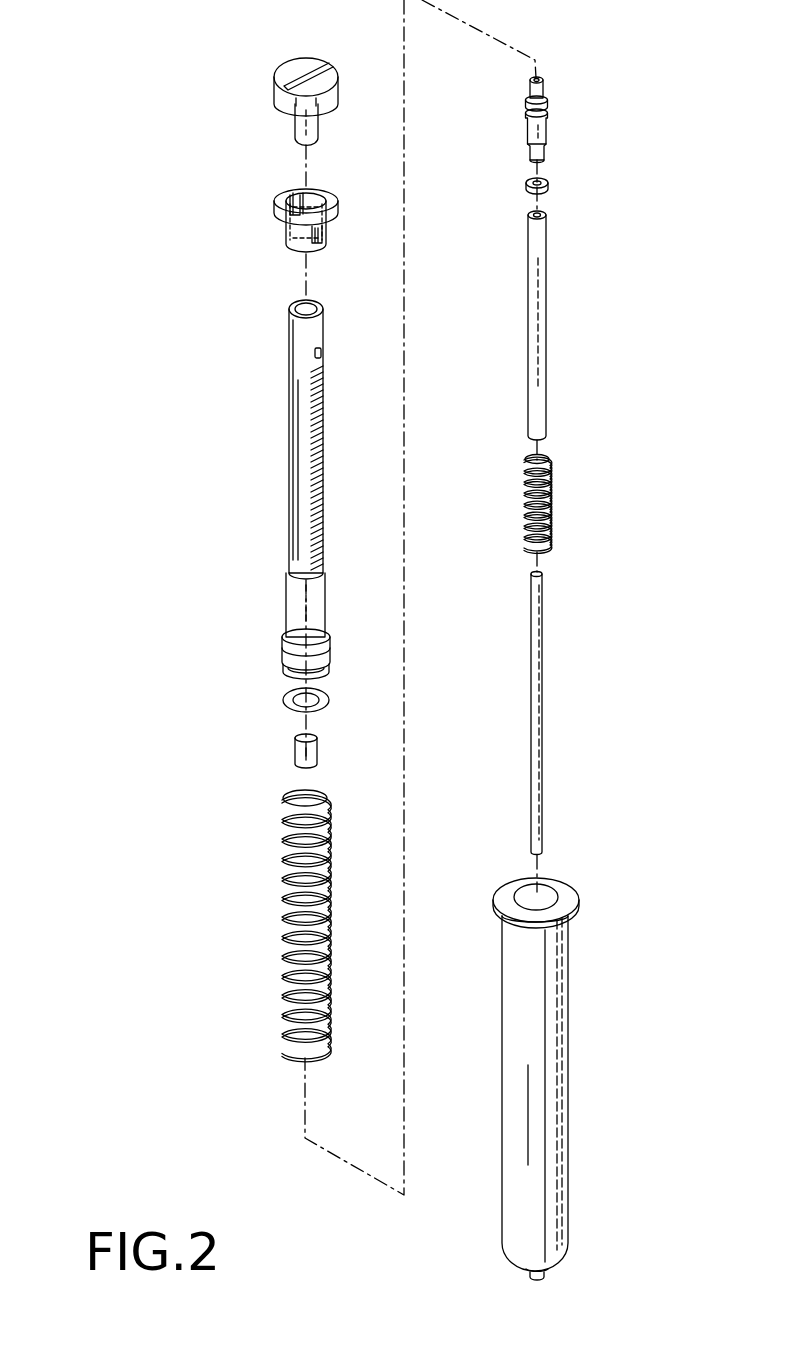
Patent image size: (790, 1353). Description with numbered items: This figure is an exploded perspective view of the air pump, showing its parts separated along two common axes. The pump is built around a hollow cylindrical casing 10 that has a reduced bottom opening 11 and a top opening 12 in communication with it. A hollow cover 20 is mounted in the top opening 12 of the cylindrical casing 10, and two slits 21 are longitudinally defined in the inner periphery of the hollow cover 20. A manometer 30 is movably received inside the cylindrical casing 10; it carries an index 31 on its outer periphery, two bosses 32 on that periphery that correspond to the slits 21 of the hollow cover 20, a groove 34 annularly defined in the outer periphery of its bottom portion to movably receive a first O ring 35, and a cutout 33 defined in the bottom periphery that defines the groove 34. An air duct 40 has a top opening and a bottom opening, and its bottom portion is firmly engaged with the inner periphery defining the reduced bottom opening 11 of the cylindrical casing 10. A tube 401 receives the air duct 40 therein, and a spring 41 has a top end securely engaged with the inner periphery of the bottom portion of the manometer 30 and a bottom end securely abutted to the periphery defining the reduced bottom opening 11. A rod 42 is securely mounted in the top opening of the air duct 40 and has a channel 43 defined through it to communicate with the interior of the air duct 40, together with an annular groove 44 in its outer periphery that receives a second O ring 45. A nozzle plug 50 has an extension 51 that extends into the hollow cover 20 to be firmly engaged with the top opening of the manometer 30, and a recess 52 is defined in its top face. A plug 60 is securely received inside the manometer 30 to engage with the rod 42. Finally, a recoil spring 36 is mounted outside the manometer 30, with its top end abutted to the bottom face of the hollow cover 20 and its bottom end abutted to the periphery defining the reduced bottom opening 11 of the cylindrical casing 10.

The cylindrical casing 10 is at (579, 1060).
The reduced bottom opening 11 is at (545, 1276).
The top opening 12 is at (552, 890).
The hollow cover 20 is at (278, 218).
The slits 21 is at (306, 198).
The manometer 30 is at (294, 490).
The index 31 is at (320, 471).
The bosses 32 is at (322, 353).
The cutout 33 is at (326, 670).
The groove 34 is at (287, 672).
The first O ring 35 is at (326, 707).
The recoil spring 36 is at (326, 899).
The air duct 40 is at (541, 691).
The tube 401 is at (543, 351).
The spring 41 is at (548, 511).
The rod 42 is at (578, 132).
The channel 43 is at (541, 78).
The annular groove 44 is at (526, 110).
The second O ring 45 is at (548, 190).
The nozzle plug 50 is at (276, 90).
The extension 51 is at (316, 126).
The recess 52 is at (307, 64).
The plug 60 is at (295, 760).